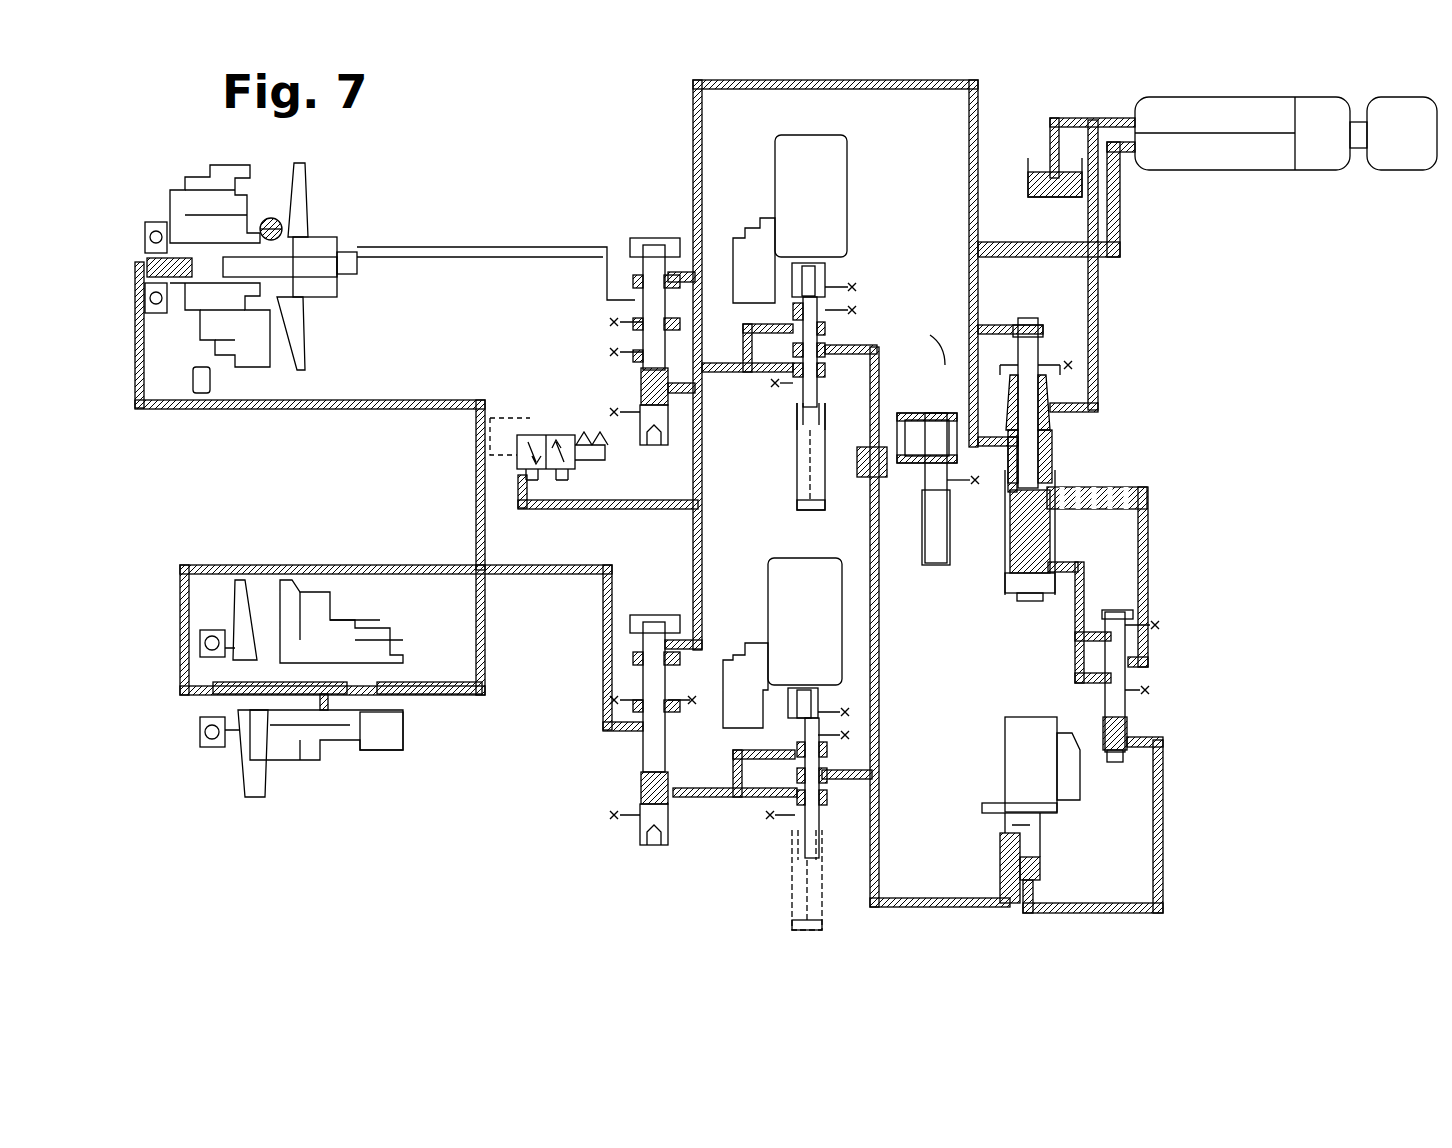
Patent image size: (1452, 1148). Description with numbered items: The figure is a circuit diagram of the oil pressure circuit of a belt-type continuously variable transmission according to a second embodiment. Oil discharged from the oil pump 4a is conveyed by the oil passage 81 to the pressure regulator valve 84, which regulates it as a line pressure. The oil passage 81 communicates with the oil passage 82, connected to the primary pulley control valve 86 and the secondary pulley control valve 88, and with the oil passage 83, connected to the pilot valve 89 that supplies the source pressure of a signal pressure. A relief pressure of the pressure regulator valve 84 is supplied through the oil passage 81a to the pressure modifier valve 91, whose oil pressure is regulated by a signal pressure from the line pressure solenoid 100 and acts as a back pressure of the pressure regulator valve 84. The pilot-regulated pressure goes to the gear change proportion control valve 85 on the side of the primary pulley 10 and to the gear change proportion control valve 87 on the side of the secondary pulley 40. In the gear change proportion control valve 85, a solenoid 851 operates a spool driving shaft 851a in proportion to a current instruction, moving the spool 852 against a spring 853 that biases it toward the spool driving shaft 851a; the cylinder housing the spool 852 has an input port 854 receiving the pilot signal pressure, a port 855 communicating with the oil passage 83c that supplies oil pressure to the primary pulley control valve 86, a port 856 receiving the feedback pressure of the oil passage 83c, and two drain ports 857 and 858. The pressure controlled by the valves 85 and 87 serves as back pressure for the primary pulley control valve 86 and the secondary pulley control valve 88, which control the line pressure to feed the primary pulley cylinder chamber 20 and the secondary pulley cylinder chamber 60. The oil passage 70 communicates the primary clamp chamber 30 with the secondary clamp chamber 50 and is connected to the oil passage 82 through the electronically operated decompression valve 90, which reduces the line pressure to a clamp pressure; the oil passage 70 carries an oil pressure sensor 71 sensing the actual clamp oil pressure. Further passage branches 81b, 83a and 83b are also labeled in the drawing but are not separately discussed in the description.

The primary pulley 10 is at (340, 195).
The primary pulley cylinder chamber 20 is at (262, 345).
The primary clamp chamber 30 is at (190, 335).
The secondary pulley 40 is at (205, 766).
The secondary clamp chamber 50 is at (380, 750).
The secondary pulley cylinder chamber 60 is at (292, 755).
The oil passage 70 is at (398, 400).
The oil pressure sensor 71 is at (195, 390).
The oil passage 81 is at (1000, 240).
The oil passage 81a is at (1118, 487).
The oil passage 81b is at (1088, 575).
The oil passage 82 is at (692, 122).
The oil passage 83 is at (968, 460).
The oil passage 83a is at (880, 618).
The oil passage 83b is at (1105, 903).
The oil passage 83c is at (730, 395).
The pressure regulator valve 84 is at (1018, 312).
The gear change proportion control valve 85 is at (829, 323).
The primary pulley control valve 86 is at (640, 228).
The gear change proportion control valve 87 is at (790, 550).
The secondary pulley control valve 88 is at (600, 788).
The pilot valve 89 is at (942, 405).
The decompression valve 90 is at (550, 420).
The pressure modifier valve 91 is at (1152, 668).
The line pressure solenoid 100 is at (1028, 712).
The solenoid 851 is at (835, 182).
The spool driving shaft 851a is at (820, 268).
The spool 852 is at (812, 335).
The spring 853 is at (825, 490).
The input port 854 is at (825, 360).
The port 855 is at (790, 375).
The port 856 is at (793, 320).
The drain port 857 is at (838, 300).
The drain port 858 is at (800, 420).
The oil pump 4a is at (1308, 172).